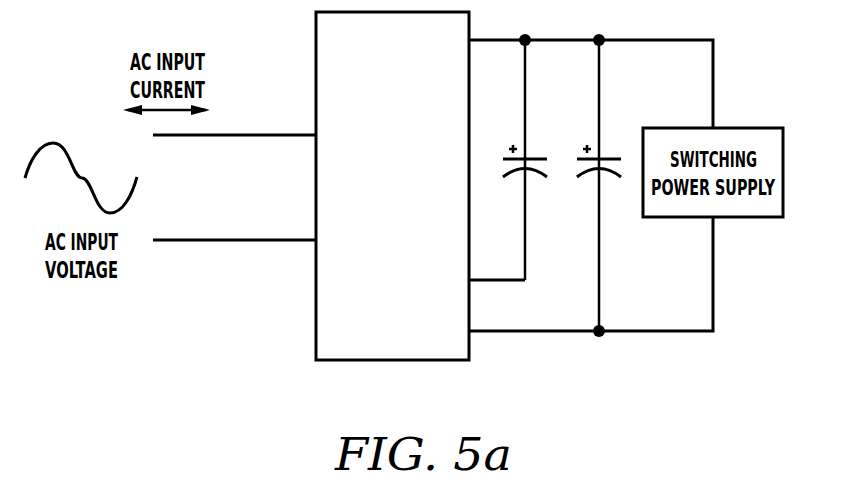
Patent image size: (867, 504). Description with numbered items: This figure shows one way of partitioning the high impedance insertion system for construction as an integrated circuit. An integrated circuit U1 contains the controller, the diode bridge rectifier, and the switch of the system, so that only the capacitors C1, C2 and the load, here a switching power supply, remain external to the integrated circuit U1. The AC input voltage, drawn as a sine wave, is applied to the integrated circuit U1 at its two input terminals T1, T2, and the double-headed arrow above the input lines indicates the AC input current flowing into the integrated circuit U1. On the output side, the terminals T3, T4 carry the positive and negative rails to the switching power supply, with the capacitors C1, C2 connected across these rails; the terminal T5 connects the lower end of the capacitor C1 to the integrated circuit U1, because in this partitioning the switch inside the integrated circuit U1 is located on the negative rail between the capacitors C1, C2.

The integrated circuit U1 is at (392, 186).
The AC input terminal T1 is at (234, 123).
The AC input terminal T2 is at (234, 229).
The DC output terminal (positive) T3 is at (591, 74).
The DC output terminal (return) T4 is at (591, 277).
The capacitor terminal T5 is at (497, 269).
The capacitor C1 is at (525, 160).
The capacitor C2 is at (599, 185).